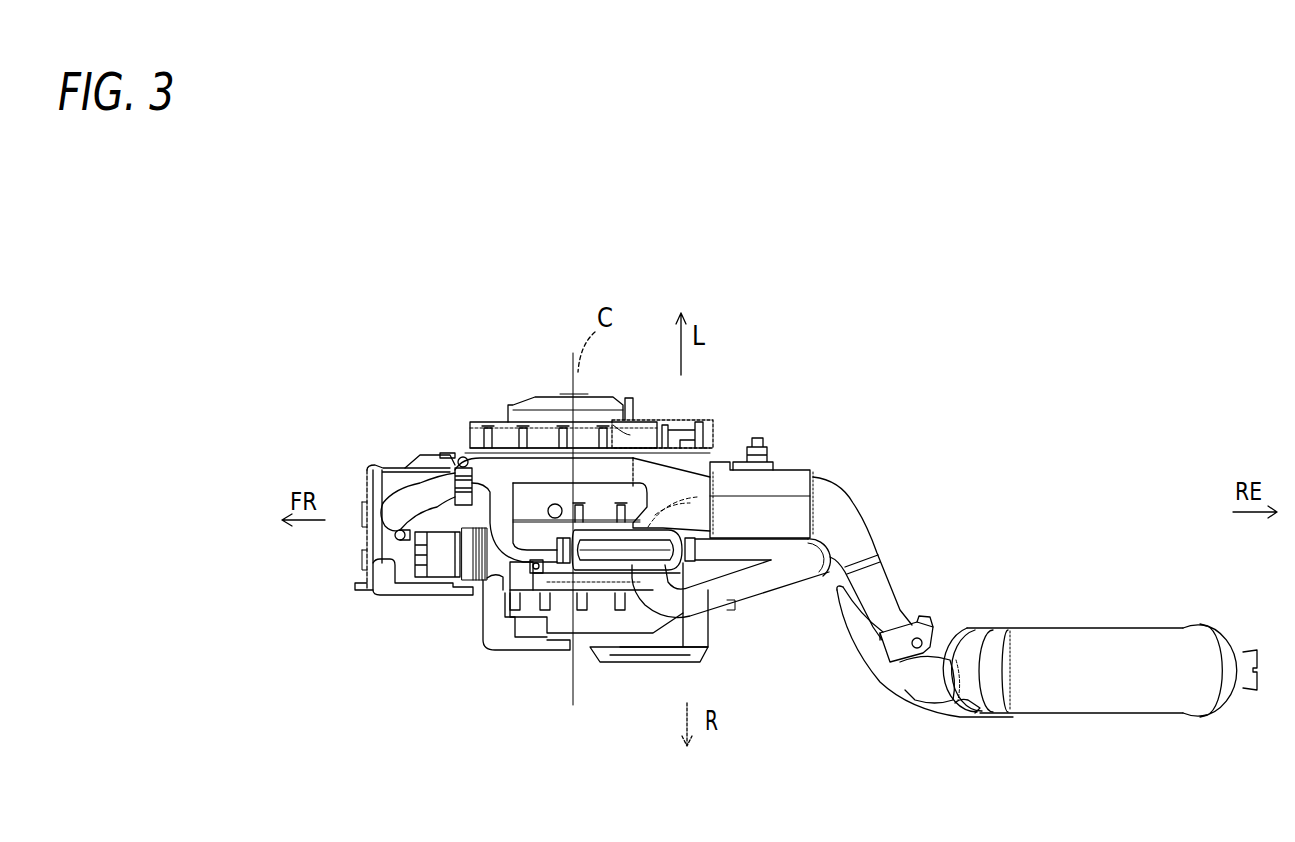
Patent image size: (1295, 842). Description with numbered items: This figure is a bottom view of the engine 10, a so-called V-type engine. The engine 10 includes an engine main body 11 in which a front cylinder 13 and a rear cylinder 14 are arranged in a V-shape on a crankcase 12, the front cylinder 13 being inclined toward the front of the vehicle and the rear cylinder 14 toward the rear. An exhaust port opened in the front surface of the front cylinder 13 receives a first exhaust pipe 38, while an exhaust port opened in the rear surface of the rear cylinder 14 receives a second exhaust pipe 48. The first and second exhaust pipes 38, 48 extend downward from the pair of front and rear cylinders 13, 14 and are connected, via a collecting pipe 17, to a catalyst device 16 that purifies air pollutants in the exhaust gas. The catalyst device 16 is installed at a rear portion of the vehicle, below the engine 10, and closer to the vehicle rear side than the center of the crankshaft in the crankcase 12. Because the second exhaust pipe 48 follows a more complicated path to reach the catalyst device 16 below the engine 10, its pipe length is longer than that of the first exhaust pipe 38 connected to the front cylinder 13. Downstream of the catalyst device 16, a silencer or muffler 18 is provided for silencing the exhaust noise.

The engine 10 is at (835, 382).
The engine main body 11 is at (455, 412).
The crankcase 12 is at (500, 424).
The front cylinder 13 is at (387, 478).
The rear cylinder 14 is at (730, 434).
The catalyst device 16 is at (792, 468).
The collecting pipe 17 is at (683, 422).
The silencer (muffler) 18 is at (1118, 640).
The first exhaust pipe 38 is at (413, 490).
The second exhaust pipe 48 is at (777, 580).